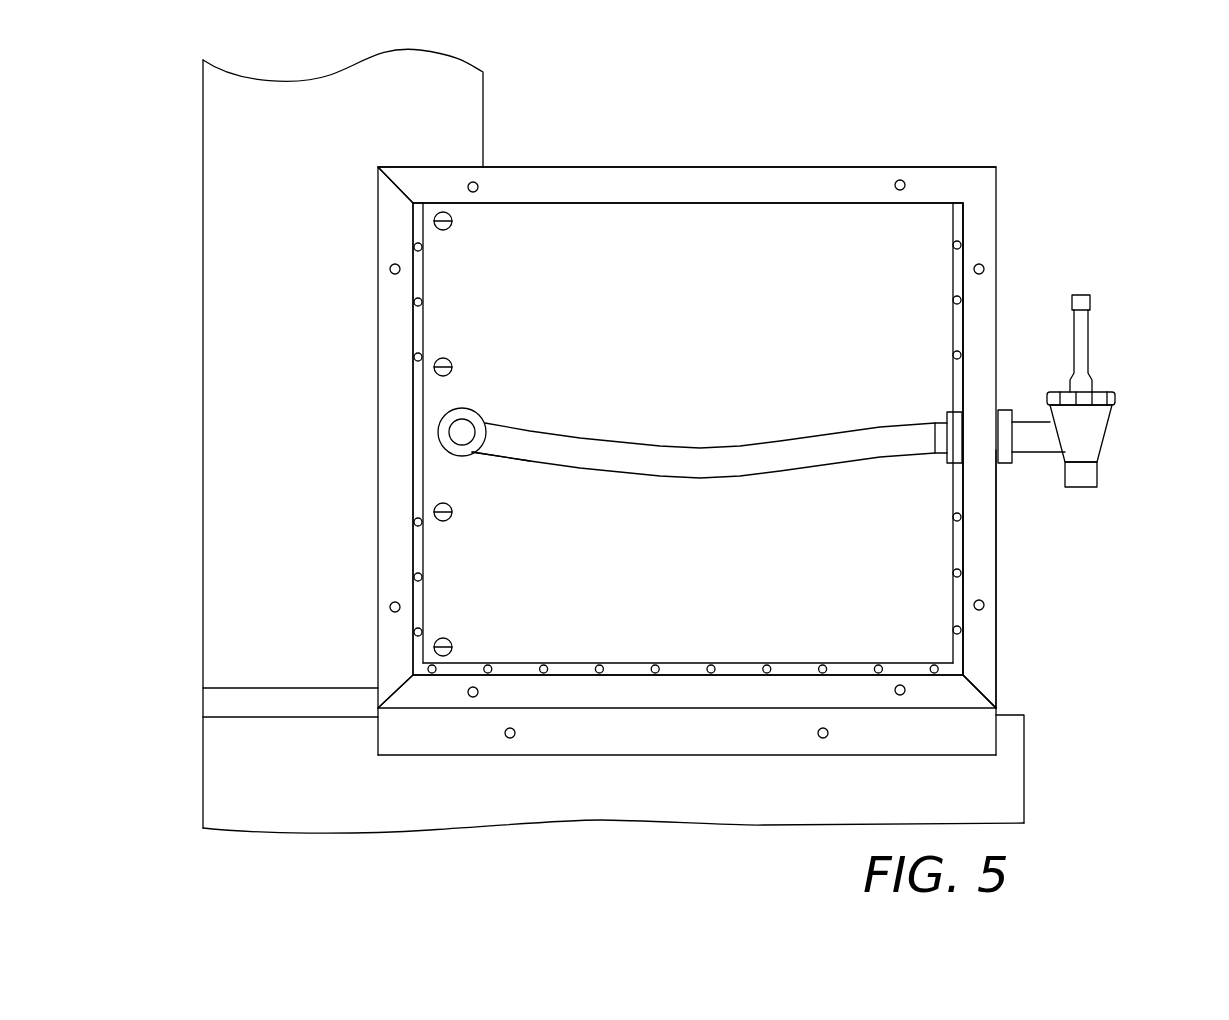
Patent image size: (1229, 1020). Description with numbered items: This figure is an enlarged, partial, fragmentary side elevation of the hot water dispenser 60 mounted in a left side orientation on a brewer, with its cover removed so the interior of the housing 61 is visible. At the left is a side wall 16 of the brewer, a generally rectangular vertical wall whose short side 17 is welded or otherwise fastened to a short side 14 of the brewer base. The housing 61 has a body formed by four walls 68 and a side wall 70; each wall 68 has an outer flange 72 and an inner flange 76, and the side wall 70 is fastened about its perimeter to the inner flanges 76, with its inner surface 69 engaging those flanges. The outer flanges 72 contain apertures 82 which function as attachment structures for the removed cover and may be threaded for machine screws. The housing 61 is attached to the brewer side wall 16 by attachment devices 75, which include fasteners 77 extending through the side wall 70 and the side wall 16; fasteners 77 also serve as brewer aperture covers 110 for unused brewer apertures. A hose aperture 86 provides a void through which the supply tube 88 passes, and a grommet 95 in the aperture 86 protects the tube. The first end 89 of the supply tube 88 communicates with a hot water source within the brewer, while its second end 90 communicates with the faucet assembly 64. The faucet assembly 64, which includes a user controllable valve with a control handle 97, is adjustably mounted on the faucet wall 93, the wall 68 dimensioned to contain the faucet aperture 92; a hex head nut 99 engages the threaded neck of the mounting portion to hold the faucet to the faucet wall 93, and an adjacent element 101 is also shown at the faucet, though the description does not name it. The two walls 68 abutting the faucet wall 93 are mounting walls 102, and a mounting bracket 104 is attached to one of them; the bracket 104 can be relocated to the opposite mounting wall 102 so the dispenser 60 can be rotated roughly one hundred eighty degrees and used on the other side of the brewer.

The short side 14 is at (312, 787).
The side wall 16 is at (240, 262).
The short side 17 is at (202, 443).
The hot water dispenser 60 is at (492, 802).
The housing 61 is at (573, 715).
The faucet assembly 64 is at (710, 135).
The wall 68 is at (370, 375).
The inner surface 69 is at (905, 240).
The side wall 70 is at (450, 311).
The outer flange 72 is at (883, 697).
The attachment device 75 is at (428, 515).
The inner flange 76 is at (912, 665).
The fastener 77 is at (447, 520).
The aperture 82 is at (390, 607).
The hose aperture 86 is at (472, 448).
The supply tube 88 is at (720, 465).
The first end 89 is at (440, 432).
The second end 90 is at (935, 418).
The faucet aperture 92 is at (1002, 463).
The faucet wall 93 is at (1000, 550).
The grommet 95 is at (462, 408).
The control handle 97 is at (1092, 348).
The hex head nut 99 is at (950, 410).
The valve body 101 is at (1045, 452).
The mounting wall 102 is at (673, 165).
The mounting bracket 104 is at (975, 728).
The brewer aperture cover 110 is at (511, 740).